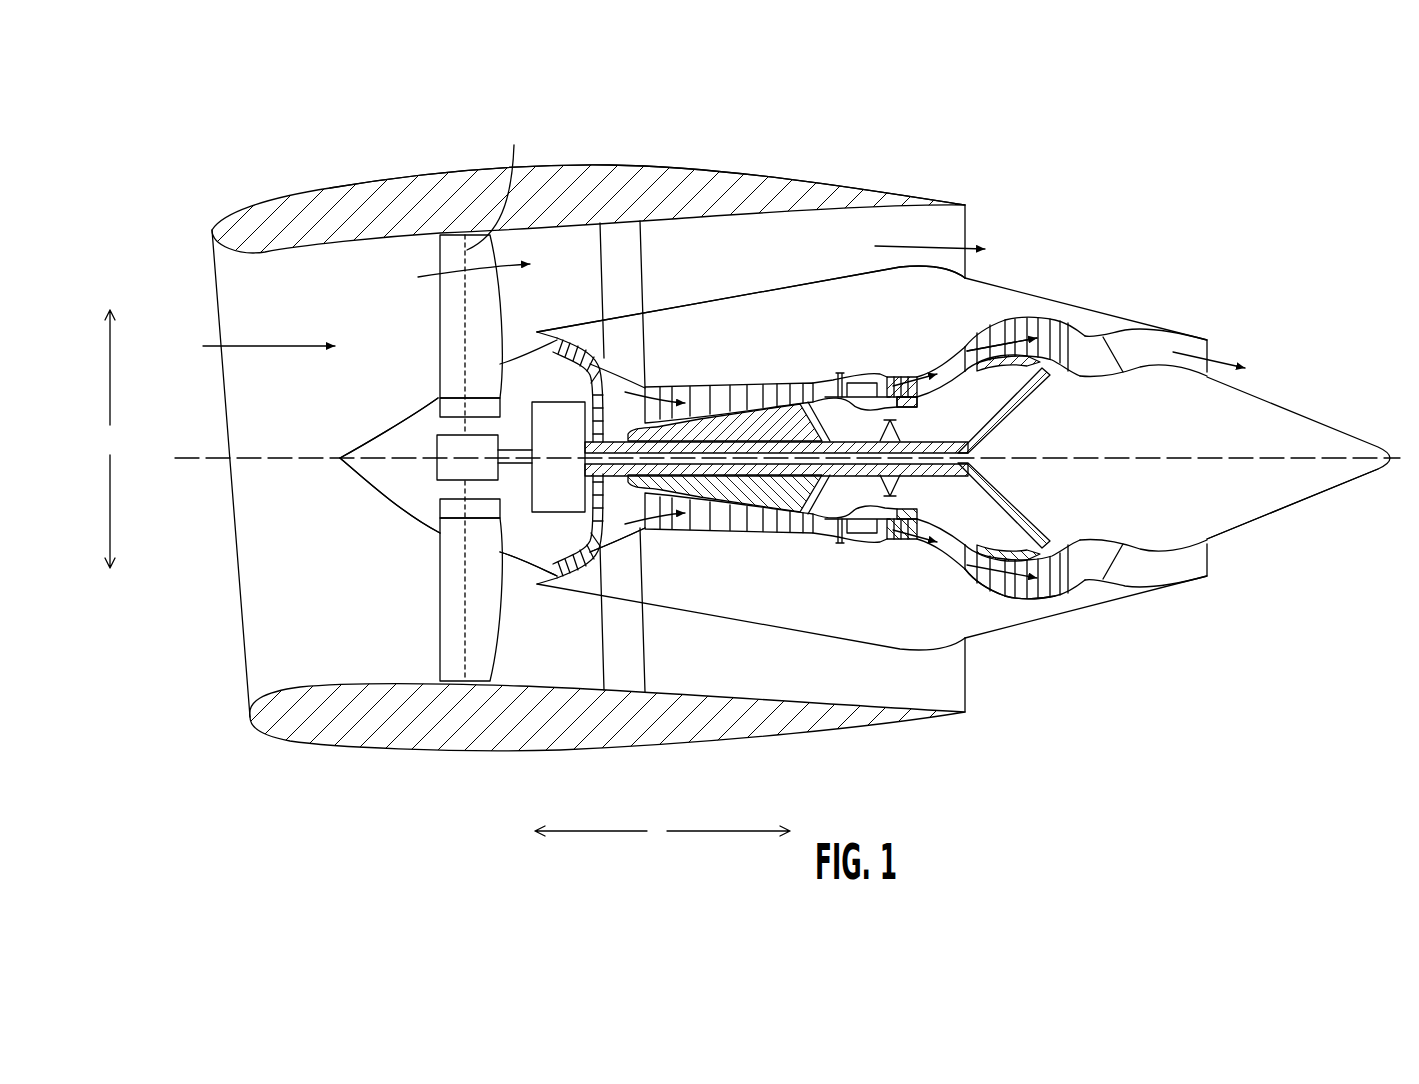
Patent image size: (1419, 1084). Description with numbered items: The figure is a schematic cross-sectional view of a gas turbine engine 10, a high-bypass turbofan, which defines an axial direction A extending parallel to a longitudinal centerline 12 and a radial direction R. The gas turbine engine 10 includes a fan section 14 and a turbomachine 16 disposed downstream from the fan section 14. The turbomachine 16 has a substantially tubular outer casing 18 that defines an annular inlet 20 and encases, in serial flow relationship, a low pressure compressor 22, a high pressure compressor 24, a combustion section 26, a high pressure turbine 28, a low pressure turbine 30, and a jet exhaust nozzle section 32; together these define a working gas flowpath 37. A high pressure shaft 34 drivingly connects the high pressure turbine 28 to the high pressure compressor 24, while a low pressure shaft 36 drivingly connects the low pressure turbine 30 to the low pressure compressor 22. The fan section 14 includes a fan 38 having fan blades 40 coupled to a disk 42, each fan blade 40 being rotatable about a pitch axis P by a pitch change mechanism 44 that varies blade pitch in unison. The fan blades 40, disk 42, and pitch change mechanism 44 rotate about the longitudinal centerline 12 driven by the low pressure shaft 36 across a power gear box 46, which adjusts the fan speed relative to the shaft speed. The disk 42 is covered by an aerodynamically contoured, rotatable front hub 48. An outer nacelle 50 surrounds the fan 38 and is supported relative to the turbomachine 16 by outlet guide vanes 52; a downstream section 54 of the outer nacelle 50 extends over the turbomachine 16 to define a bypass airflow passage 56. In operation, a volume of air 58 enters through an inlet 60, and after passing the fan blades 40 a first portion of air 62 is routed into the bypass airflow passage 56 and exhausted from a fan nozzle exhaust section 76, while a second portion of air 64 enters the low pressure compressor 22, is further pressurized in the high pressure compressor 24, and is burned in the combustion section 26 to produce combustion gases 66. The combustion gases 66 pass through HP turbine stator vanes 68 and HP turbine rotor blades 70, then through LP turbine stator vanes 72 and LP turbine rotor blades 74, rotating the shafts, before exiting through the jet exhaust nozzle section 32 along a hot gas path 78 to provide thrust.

The gas turbine engine 10 is at (1125, 172).
The longitudinal centerline 12 is at (1153, 457).
The fan section 14 is at (403, 251).
The turbomachine 16 is at (777, 312).
The outer casing 18 is at (798, 631).
The annular inlet 20 is at (550, 572).
The low pressure compressor 22 is at (600, 538).
The high pressure compressor 24 is at (677, 530).
The combustion section 26 is at (857, 535).
The high pressure turbine 28 is at (928, 531).
The low pressure turbine 30 is at (1059, 604).
The jet exhaust nozzle section 32 is at (1118, 593).
The high pressure shaft 34 is at (893, 417).
The low pressure shaft 36 is at (970, 437).
The working gas flowpath 37 is at (633, 545).
The fan 38 is at (400, 518).
The fan blades 40 is at (437, 603).
The disk 42 is at (440, 407).
The pitch change mechanism 44 is at (437, 443).
The power gear box 46 is at (573, 418).
The front hub 48 is at (343, 472).
The outer nacelle 50 is at (470, 752).
The outlet guide vanes 52 is at (643, 262).
The downstream section 54 is at (873, 188).
The bypass airflow passage 56 is at (824, 261).
The volume of air 58 is at (265, 343).
The inlet 60 is at (247, 687).
The first portion of air 62 is at (450, 273).
The second portion of air 64 is at (520, 343).
The combustion gases 66 is at (905, 383).
The HP turbine stator vanes 68 is at (873, 536).
The HP turbine rotor blades 70 is at (960, 487).
The LP turbine stator vanes 72 is at (970, 568).
The LP turbine rotor blades 74 is at (984, 595).
The fan nozzle exhaust section 76 is at (968, 268).
The hot gas path 78 is at (957, 356).
The pitch axis P is at (493, 183).
The radial direction R is at (111, 439).
The axial direction A is at (662, 831).